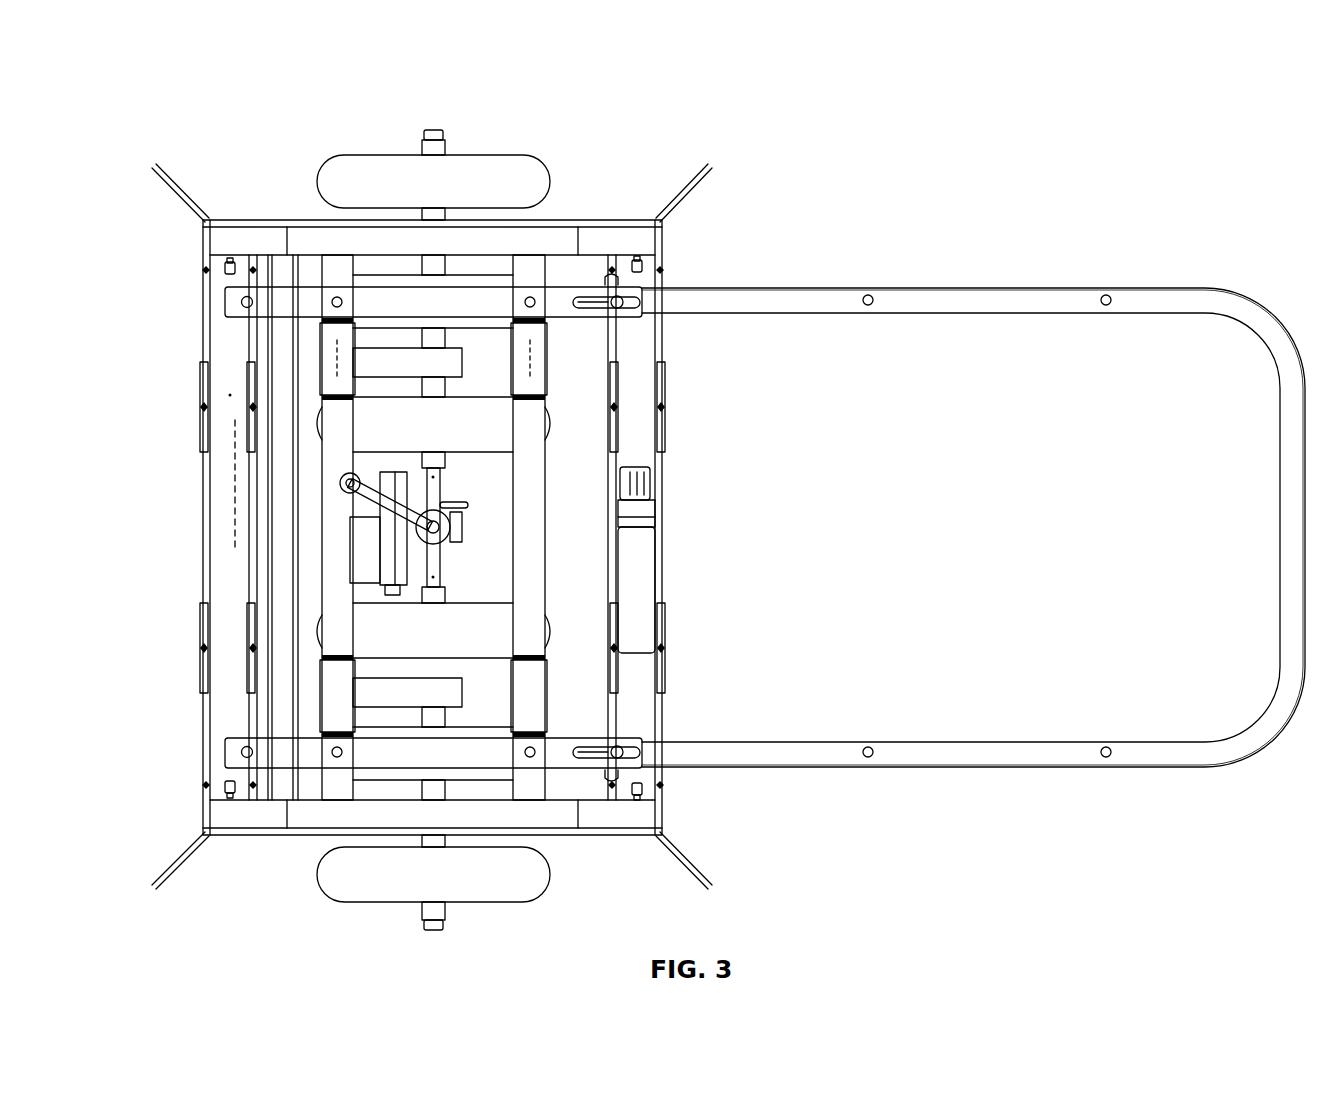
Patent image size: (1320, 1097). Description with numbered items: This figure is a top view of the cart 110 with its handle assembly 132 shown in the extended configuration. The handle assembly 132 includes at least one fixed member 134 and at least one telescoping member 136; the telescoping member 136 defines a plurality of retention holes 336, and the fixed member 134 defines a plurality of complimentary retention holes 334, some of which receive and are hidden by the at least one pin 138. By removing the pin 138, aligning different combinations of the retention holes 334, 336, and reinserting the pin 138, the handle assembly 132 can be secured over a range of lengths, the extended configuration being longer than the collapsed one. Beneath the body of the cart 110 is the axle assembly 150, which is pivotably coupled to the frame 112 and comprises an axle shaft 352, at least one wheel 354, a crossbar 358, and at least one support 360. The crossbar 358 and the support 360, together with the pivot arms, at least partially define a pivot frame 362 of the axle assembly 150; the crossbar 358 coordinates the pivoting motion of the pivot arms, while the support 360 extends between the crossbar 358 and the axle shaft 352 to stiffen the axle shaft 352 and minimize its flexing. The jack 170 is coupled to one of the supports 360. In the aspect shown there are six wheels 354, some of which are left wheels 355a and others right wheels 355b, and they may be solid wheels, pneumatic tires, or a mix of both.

The cart 110 is at (148, 130).
The frame 112 is at (222, 592).
The handle assembly 132 is at (1237, 300).
The fixed member 134 is at (233, 310).
The telescoping member 136 is at (972, 476).
The pin 138 is at (642, 302).
The axle assembly 150 is at (435, 133).
The jack 170 is at (420, 533).
The complimentary retention holes 334 is at (242, 302).
The retention holes 336 is at (868, 295).
The axle shaft 352 is at (433, 567).
The wheel 354 is at (383, 420).
The left wheels 355a is at (357, 890).
The right wheels 355b is at (377, 170).
The crossbar 358 is at (280, 443).
The support 360 is at (452, 367).
The pivot frame 362 is at (199, 527).